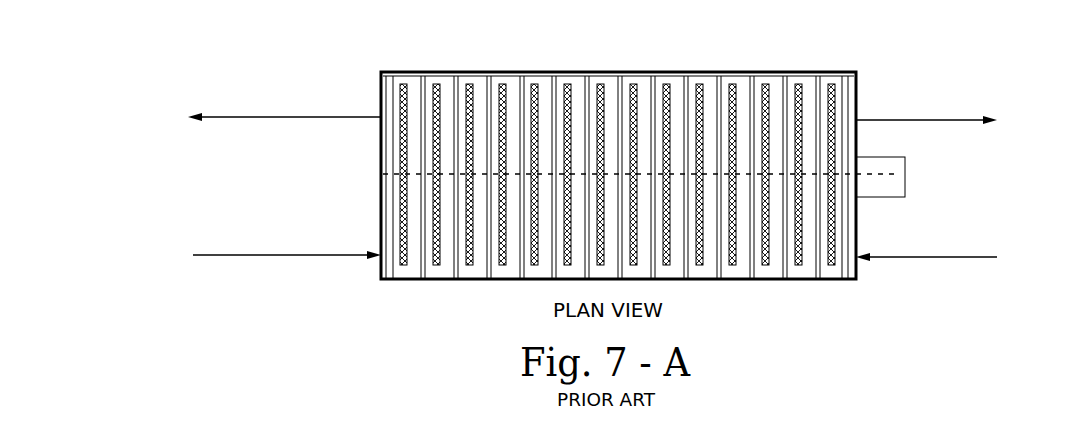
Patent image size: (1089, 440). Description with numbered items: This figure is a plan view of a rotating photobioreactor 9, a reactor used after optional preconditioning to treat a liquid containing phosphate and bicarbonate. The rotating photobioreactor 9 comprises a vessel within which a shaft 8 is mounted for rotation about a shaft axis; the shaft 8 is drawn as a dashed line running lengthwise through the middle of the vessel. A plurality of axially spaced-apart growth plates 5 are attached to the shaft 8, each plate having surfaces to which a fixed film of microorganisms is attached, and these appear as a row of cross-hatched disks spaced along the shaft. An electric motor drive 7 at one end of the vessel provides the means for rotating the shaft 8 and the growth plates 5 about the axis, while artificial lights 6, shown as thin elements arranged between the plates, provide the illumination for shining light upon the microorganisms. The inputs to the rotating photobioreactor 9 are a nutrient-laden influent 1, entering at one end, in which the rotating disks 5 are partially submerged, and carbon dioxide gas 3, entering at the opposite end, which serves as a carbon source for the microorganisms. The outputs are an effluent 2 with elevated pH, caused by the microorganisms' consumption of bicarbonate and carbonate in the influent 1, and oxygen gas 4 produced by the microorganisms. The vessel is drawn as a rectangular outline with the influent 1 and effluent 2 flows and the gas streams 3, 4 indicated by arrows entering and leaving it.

The influent 1 is at (942, 244).
The effluent 2 is at (284, 102).
The carbon dioxide gas 3 is at (287, 241).
The oxygen gas 4 is at (932, 109).
The growth plates 5 is at (617, 146).
The artificial lights 6 is at (575, 193).
The electric motor drive 7 is at (921, 177).
The shaft 8 is at (589, 171).
The rotating photobioreactor 9 is at (626, 154).